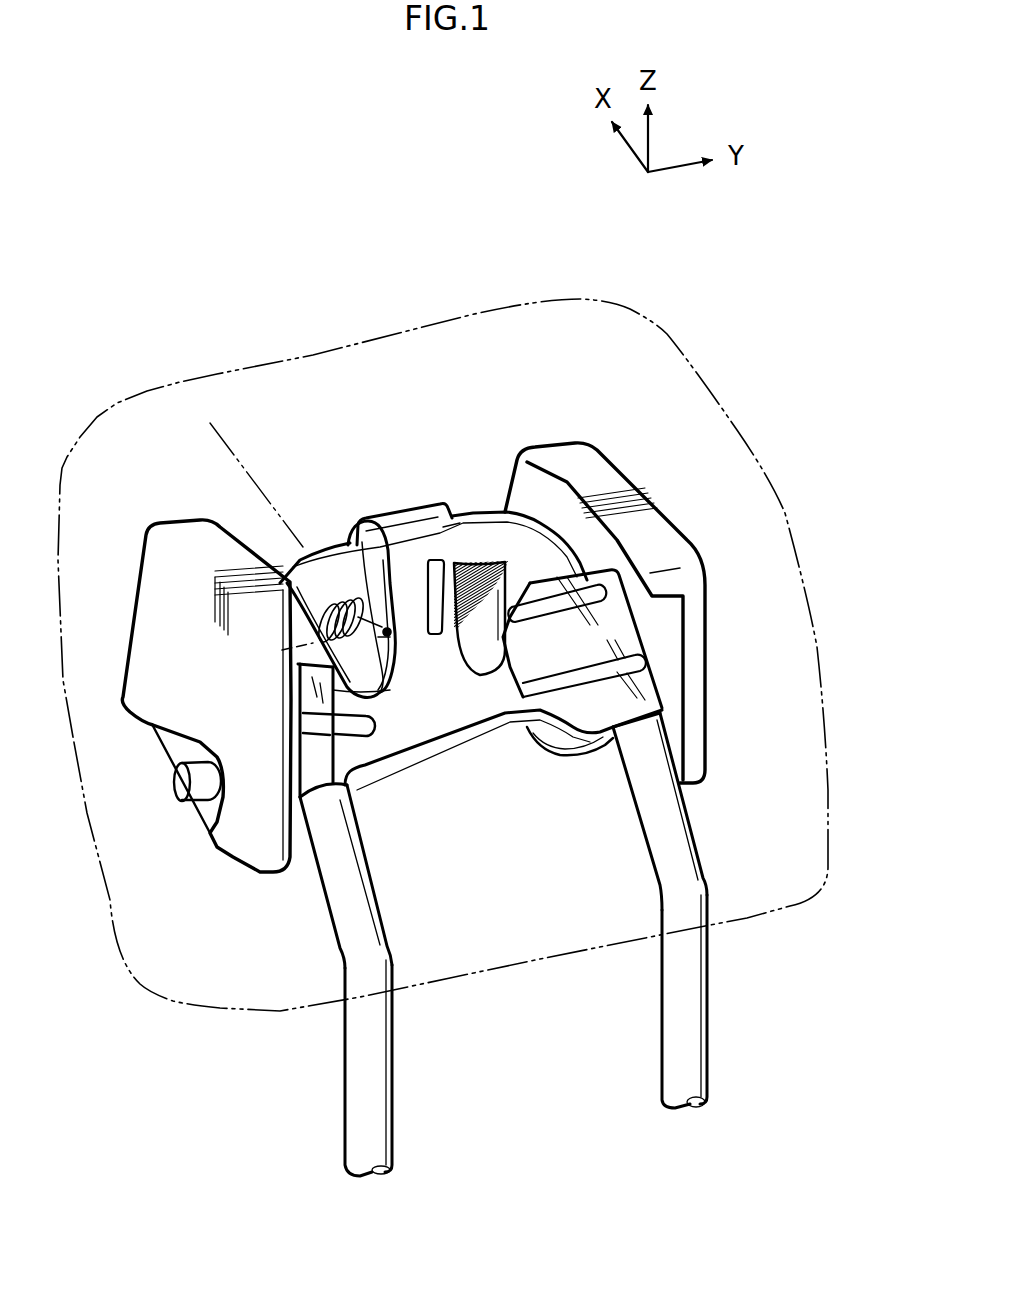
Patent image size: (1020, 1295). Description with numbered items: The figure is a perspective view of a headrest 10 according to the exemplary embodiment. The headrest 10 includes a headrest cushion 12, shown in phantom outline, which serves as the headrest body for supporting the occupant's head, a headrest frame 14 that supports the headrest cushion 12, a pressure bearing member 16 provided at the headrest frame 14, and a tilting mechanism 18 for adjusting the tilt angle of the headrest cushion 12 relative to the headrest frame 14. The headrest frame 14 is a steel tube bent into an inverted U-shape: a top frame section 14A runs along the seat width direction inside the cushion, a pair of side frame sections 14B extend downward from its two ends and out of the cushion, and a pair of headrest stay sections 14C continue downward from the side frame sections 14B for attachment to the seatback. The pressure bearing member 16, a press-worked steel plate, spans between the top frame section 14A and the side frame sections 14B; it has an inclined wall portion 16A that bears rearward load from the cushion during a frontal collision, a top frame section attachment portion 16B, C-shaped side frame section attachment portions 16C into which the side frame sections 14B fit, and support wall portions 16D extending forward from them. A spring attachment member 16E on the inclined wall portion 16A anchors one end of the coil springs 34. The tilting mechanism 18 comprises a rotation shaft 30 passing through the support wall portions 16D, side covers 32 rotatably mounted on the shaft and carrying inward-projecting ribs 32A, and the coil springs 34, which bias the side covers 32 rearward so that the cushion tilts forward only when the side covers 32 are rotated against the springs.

The headrest 10 is at (747, 255).
The headrest cushion 12 is at (670, 333).
The headrest frame 14 is at (519, 813).
The top frame section 14A is at (360, 533).
The side frame sections 14B is at (318, 868).
The headrest stay sections 14C is at (343, 1093).
The pressure bearing member 16 is at (474, 652).
The inclined wall portion 16A is at (447, 695).
The top frame section attachment portion 16B is at (458, 540).
The side frame section attachment portions 16C is at (357, 775).
The support wall portions 16D is at (580, 735).
The spring attachment member 16E is at (340, 580).
The tilting mechanism 18 is at (177, 815).
The rotation shaft 30 is at (176, 783).
The side covers 32 is at (137, 565).
The ribs 32A is at (228, 548).
The coil springs 34 is at (390, 690).